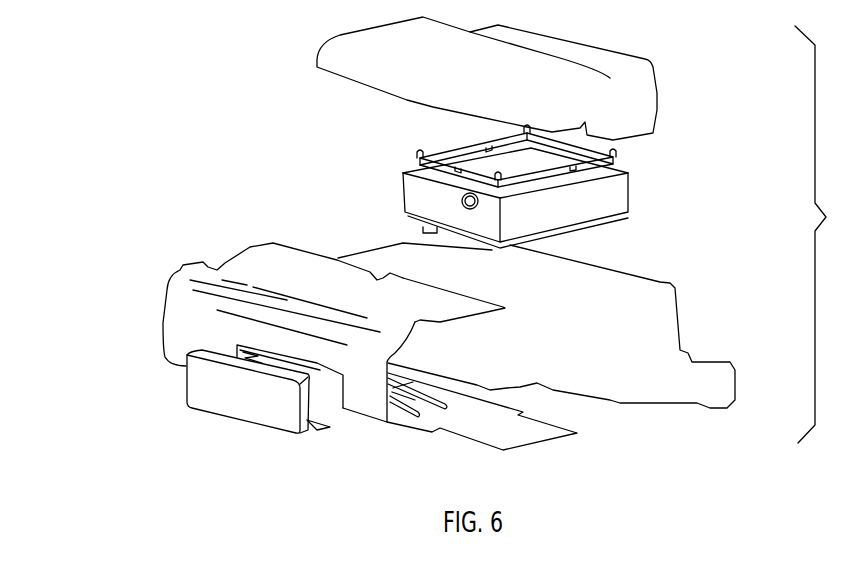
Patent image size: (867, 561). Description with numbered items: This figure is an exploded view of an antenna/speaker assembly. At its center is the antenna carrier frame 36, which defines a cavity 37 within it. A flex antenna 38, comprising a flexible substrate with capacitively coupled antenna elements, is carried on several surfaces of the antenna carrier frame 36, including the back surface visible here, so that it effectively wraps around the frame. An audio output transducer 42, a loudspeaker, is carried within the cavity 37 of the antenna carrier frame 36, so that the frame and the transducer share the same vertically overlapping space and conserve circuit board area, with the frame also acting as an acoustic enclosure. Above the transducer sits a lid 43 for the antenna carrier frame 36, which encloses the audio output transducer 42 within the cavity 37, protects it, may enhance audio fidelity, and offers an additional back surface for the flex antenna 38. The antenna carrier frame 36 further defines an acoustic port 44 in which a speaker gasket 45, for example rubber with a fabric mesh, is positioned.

The antenna carrier frame 36 is at (675, 278).
The cavity 37 is at (577, 243).
The flex antenna 38 is at (170, 245).
The audio output transducer 42 is at (620, 170).
The lid 43 is at (658, 82).
The acoustic port 44 is at (347, 360).
The speaker gasket 45 is at (180, 333).